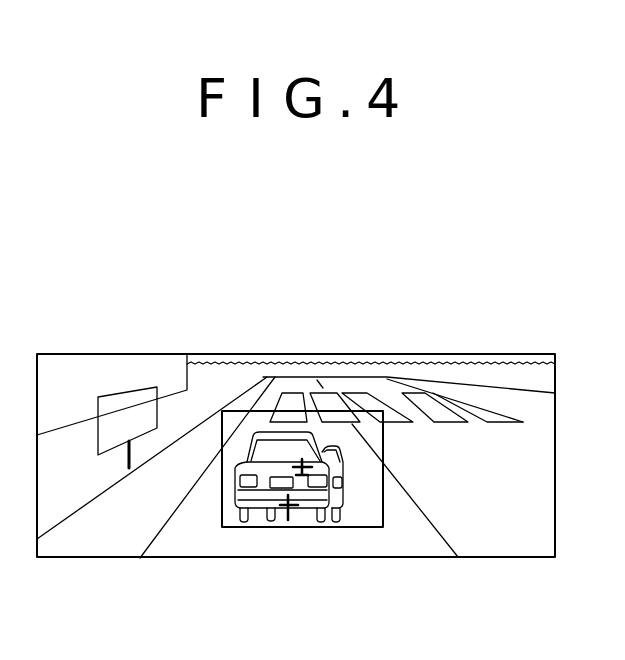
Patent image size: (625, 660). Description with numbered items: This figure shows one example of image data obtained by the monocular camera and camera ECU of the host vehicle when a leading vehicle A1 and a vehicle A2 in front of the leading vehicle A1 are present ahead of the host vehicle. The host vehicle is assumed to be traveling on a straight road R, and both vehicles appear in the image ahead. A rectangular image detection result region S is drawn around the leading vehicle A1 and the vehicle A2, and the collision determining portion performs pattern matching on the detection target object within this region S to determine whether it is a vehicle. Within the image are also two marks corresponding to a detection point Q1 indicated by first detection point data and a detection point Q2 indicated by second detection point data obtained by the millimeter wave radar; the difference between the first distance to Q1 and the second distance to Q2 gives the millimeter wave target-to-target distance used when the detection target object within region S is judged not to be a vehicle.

The straight road R is at (431, 522).
The image detection result region S is at (384, 435).
The detection point Q1 is at (317, 476).
The detection point Q2 is at (284, 518).
The leading vehicle A1 is at (234, 518).
The vehicle in front of the leading vehicle A2 is at (336, 478).